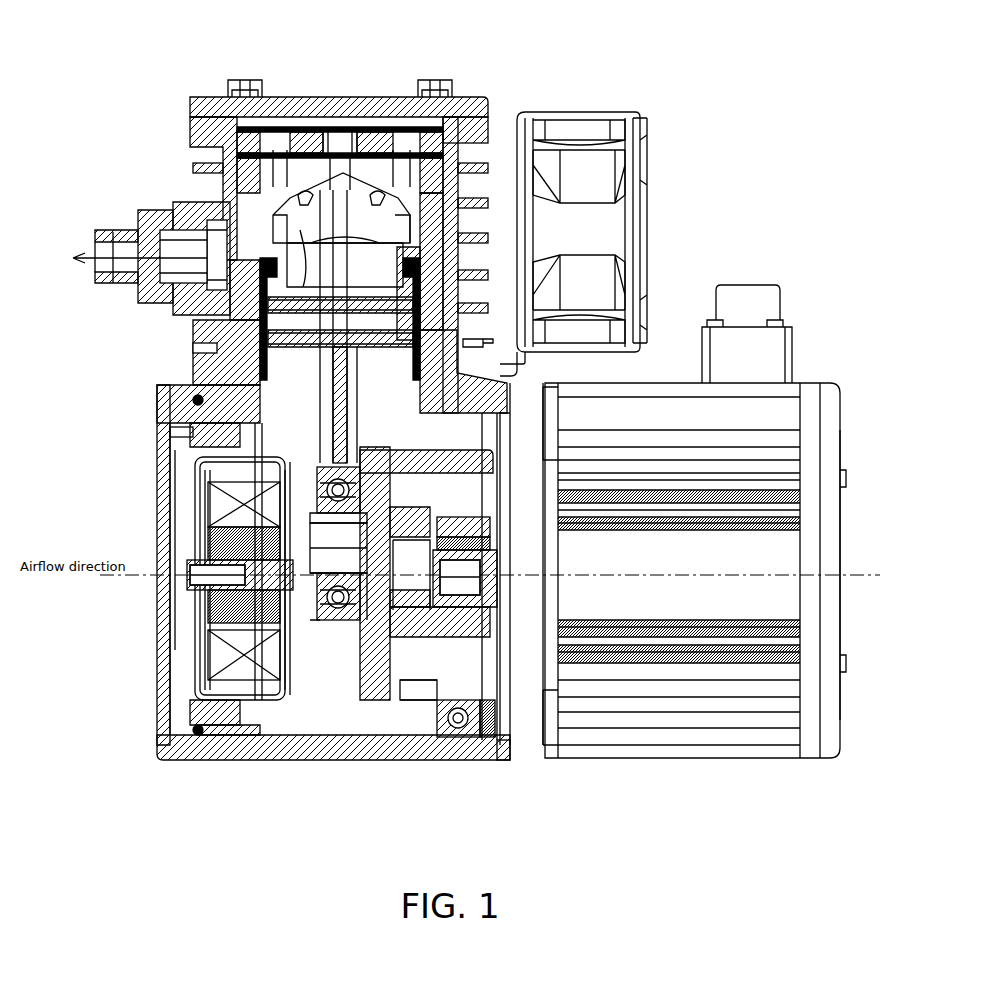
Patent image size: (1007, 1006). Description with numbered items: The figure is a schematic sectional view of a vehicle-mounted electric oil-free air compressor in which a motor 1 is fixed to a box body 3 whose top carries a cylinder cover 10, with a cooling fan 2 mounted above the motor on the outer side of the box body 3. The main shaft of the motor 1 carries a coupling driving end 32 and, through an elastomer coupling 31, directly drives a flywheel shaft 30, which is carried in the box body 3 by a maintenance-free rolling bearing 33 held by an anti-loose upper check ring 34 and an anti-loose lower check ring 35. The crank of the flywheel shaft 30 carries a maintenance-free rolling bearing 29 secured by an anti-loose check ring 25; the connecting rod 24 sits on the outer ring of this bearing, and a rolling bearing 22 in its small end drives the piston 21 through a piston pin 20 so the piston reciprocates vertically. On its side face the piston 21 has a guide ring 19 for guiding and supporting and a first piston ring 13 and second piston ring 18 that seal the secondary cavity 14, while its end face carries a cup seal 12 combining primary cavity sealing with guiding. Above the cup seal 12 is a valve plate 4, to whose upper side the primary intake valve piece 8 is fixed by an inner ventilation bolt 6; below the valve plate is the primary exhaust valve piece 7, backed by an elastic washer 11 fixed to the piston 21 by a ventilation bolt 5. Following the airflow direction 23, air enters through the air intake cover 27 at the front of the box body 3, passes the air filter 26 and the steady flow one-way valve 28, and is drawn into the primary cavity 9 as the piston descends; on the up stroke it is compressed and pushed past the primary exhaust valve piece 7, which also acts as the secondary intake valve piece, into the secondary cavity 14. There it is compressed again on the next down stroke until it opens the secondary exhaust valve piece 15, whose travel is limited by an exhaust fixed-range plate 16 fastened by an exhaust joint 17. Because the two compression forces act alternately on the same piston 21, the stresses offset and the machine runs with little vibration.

The motor 1 is at (713, 398).
The cooling fan 2 is at (592, 153).
The box body 3 is at (437, 330).
The valve plate 4 is at (433, 133).
The ventilation bolt 5 is at (402, 133).
The inner ventilation bolt 6 is at (350, 133).
The primary exhaust valve piece 7 is at (330, 140).
The primary intake valve piece 8 is at (283, 157).
The primary cavity 9 is at (200, 97).
The cylinder cover 10 is at (222, 140).
The elastic washer 11 is at (192, 115).
The cup seal 12 is at (192, 125).
The first piston ring 13 is at (243, 133).
The secondary cavity 14 is at (250, 163).
The secondary exhaust valve piece 15 is at (233, 197).
The exhaust fixed-range plate 16 is at (143, 213).
The exhaust joint 17 is at (165, 268).
The second piston ring 18 is at (262, 268).
The guide ring 19 is at (255, 300).
The piston pin 20 is at (262, 355).
The piston 21 is at (318, 475).
The rolling bearing 22 is at (312, 540).
The airflow direction 23 is at (139, 551).
The connecting rod 24 is at (213, 512).
The anti-loose check ring 25 is at (200, 577).
The air filter 26 is at (208, 630).
The air intake cover 27 is at (215, 705).
The steady flow one-way valve 28 is at (202, 733).
The maintenance-free rolling bearing 29 is at (275, 620).
The flywheel shaft 30 is at (327, 623).
The elastomer coupling 31 is at (377, 633).
The coupling driving end 32 is at (430, 640).
The maintenance-free rolling bearing 33 is at (453, 737).
The anti-loose upper check ring 34 is at (477, 695).
The anti-loose lower check ring 35 is at (508, 763).